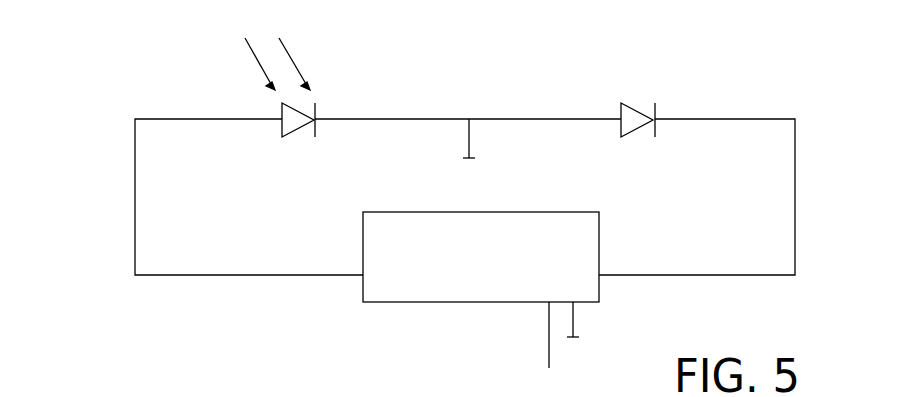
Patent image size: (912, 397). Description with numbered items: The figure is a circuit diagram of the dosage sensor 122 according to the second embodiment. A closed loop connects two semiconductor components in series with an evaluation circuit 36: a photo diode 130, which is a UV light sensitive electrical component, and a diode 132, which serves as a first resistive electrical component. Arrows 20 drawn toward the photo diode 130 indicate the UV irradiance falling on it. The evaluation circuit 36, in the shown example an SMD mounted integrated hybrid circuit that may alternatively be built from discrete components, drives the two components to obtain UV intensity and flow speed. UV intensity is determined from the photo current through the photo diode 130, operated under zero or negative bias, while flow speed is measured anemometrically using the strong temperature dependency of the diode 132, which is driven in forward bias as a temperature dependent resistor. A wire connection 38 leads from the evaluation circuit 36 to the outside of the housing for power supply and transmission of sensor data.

The incident light 20 is at (277, 33).
The evaluation circuit 36 is at (479, 264).
The wire connection 38 is at (546, 332).
The sensor 122 is at (108, 191).
The photo diode 130 is at (310, 107).
The diode 132 is at (633, 106).